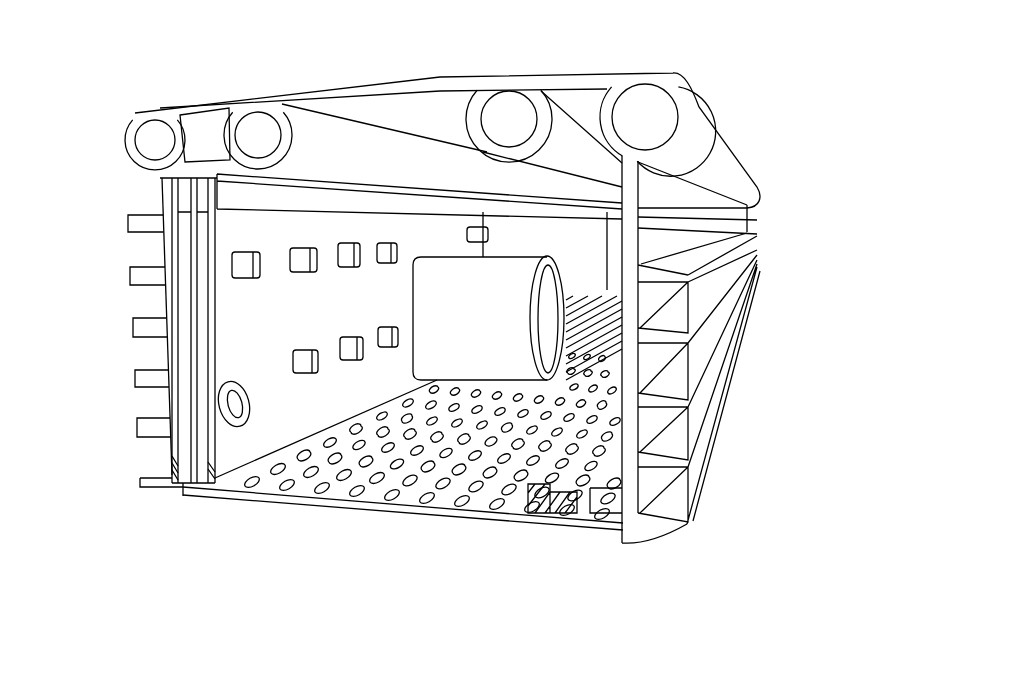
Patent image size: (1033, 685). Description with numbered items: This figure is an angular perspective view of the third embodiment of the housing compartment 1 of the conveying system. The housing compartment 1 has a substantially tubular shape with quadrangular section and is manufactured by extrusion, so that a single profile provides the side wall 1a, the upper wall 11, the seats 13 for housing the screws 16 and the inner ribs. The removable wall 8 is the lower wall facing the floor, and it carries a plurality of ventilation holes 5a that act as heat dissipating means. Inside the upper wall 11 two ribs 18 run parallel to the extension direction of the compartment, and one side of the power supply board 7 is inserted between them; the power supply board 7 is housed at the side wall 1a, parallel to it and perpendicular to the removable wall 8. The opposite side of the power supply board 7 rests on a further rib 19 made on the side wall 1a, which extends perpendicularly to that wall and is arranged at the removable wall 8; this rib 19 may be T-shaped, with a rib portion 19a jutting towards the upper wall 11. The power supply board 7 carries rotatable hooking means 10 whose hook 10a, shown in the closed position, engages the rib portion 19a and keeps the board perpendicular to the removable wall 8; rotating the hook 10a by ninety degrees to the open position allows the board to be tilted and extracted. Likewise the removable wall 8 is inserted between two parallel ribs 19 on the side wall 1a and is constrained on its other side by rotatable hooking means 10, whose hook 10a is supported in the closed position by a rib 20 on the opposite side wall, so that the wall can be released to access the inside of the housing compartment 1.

The housing compartment 1 is at (762, 102).
The side wall 1a is at (166, 254).
The ventilation holes 5a is at (418, 472).
The power supply board 7 is at (225, 313).
The removable wall 8 is at (246, 504).
The rotatable hooking means 10 is at (550, 549).
The hook 10a is at (607, 475).
The upper wall 11 is at (373, 85).
The seats 13 is at (155, 132).
The screws 16 is at (632, 249).
The ribs 18 is at (185, 195).
The rib 19 is at (186, 473).
The rib portion 19a is at (193, 463).
The rib 20 is at (622, 490).